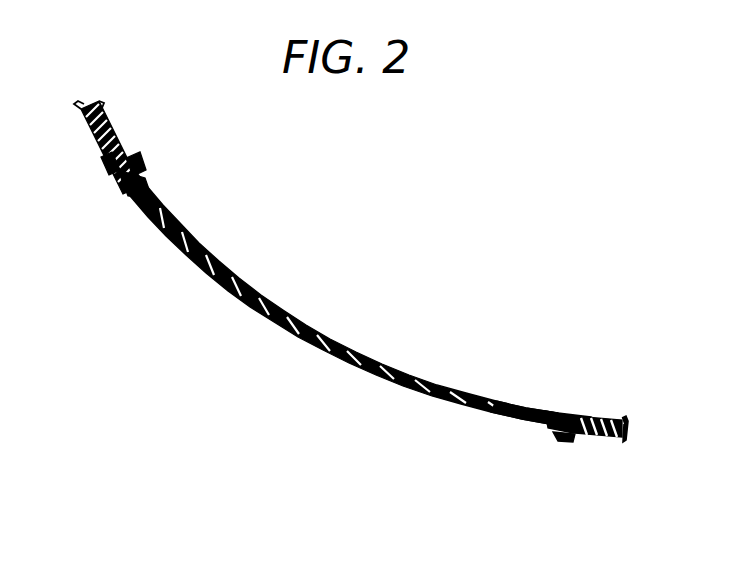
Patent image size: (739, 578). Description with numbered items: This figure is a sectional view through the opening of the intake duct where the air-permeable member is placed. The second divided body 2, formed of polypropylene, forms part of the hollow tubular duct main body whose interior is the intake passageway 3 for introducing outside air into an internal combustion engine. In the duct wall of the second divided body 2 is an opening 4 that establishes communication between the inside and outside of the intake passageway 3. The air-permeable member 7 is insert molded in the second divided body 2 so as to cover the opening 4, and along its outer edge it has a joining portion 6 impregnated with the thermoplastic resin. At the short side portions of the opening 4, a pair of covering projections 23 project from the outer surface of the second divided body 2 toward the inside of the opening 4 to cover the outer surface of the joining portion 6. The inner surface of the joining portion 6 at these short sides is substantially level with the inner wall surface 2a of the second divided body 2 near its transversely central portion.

The second divided body 2 is at (615, 440).
The inner wall surface 2a is at (602, 417).
The intake passageway 3 is at (410, 251).
The opening 4 is at (515, 450).
The joining portion 6 is at (132, 163).
The air-permeable member 7 is at (325, 350).
The covering projection 23 is at (110, 178).